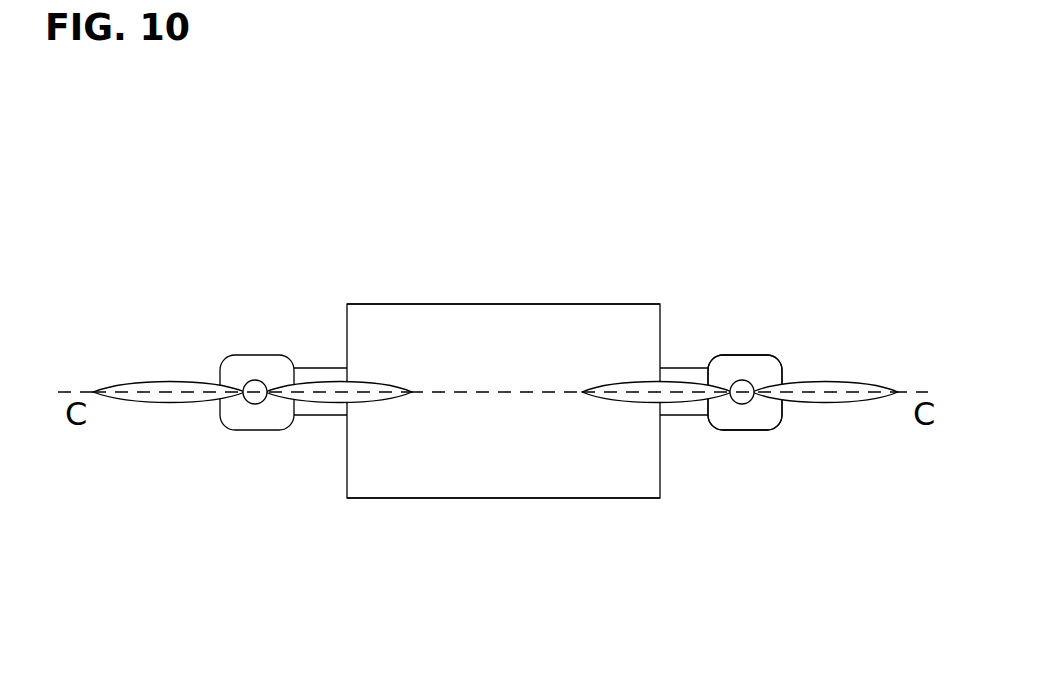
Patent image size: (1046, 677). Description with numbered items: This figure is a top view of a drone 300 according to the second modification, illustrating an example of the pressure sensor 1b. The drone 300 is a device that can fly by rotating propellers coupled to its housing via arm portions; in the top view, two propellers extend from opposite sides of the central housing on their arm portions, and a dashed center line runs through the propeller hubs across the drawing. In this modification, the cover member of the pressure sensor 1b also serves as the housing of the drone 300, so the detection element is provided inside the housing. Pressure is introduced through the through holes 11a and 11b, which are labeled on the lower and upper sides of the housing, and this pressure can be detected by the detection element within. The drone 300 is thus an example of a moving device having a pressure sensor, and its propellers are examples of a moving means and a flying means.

The drone 300 is at (273, 180).
The pressure sensor 1b is at (532, 258).
The through hole 11a is at (600, 498).
The through hole 11b is at (600, 304).